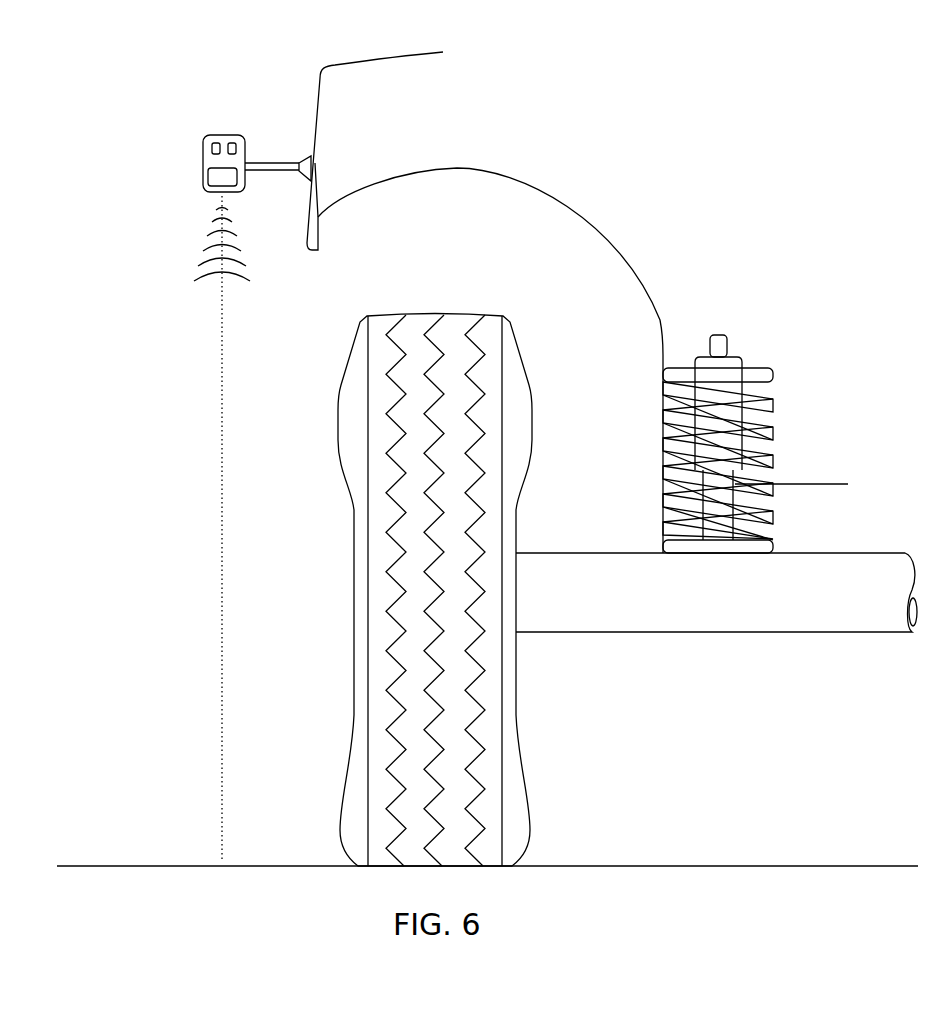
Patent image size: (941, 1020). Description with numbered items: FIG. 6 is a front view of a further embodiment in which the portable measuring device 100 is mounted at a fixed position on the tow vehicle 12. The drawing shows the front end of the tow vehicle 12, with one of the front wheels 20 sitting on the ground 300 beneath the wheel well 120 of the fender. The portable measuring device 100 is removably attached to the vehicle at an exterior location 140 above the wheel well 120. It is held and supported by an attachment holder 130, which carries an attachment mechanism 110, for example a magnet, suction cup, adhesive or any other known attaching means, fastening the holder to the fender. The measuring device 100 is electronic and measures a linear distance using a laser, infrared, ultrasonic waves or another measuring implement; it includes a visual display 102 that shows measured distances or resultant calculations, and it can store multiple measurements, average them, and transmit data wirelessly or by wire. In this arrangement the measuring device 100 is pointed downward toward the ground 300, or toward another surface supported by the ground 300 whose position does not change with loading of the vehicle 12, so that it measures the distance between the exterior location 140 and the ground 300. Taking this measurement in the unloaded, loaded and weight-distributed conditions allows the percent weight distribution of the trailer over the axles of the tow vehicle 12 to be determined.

The tow vehicle 12 is at (522, 108).
The front wheels 20 is at (350, 575).
The portable measuring device 100 is at (205, 153).
The visual display 102 is at (210, 174).
The attachment mechanism 110 is at (314, 163).
The wheel well 120 is at (378, 180).
The attachment holder 130 is at (273, 158).
The exterior location 140 is at (340, 100).
The ground 300 is at (154, 866).